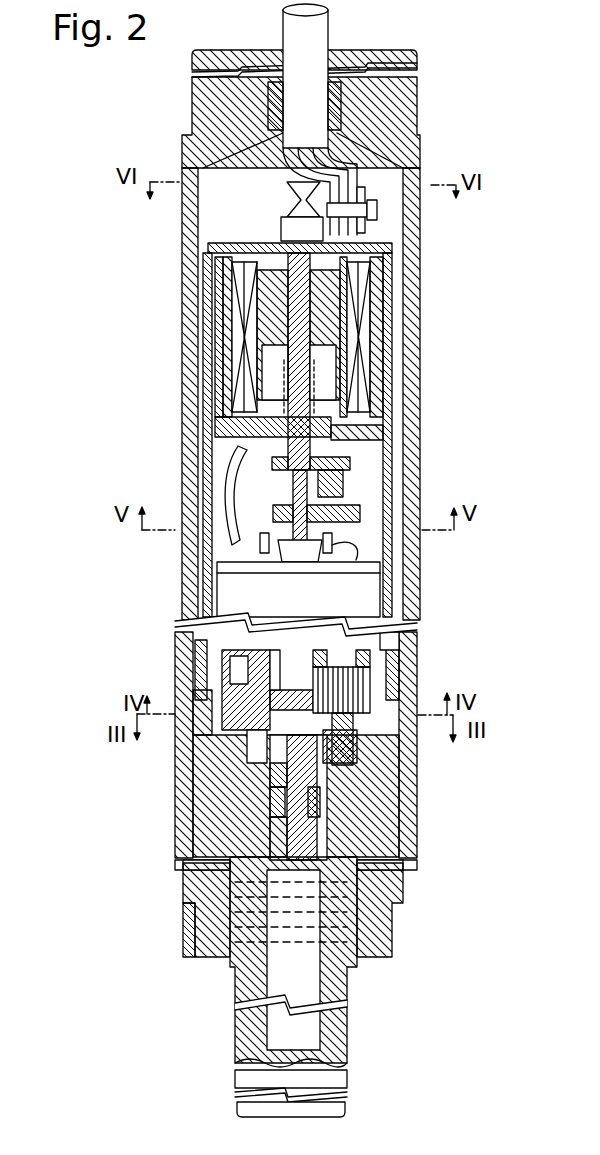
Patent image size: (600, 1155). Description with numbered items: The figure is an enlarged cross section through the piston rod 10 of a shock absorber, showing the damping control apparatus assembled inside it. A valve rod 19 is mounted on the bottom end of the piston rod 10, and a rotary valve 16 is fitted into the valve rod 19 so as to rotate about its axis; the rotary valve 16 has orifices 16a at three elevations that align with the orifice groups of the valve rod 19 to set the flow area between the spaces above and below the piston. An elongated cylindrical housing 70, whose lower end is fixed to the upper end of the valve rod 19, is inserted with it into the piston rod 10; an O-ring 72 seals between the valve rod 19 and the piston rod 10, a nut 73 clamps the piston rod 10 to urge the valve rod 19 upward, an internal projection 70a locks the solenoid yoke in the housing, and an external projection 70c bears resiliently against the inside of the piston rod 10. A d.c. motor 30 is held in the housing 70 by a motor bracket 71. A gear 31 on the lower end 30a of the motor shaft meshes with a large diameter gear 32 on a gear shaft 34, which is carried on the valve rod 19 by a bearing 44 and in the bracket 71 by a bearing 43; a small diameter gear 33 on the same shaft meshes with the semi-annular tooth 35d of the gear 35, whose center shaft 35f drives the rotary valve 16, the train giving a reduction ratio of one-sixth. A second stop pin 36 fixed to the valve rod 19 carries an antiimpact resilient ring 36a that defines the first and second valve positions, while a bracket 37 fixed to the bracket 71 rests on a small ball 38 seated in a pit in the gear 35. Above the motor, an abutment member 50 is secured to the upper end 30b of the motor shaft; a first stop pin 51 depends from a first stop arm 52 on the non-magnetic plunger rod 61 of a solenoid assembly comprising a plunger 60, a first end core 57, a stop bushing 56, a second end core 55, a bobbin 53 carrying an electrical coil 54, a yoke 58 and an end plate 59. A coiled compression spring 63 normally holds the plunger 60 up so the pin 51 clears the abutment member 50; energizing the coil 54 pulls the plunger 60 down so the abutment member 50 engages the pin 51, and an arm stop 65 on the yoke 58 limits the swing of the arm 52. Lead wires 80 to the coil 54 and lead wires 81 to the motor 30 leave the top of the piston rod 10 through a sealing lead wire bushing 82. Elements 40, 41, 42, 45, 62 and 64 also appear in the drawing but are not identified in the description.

The piston rod 10 is at (134, 138).
The rotary valve 16 is at (403, 896).
The orifices 16a is at (392, 935).
The valve rod 19 is at (240, 978).
The motor 30 is at (236, 603).
The lower end of the rotary shaft of the motor 30a is at (400, 634).
The upper end of the rotary shaft of the motor 30b is at (385, 552).
The gear 31 is at (298, 593).
The large diameter gear 32 is at (372, 682).
The small diameter gear 33 is at (356, 742).
The gear shaft 34 is at (330, 785).
The gear 35 is at (215, 746).
The semi-annular tooth 35d is at (360, 752).
The center shaft 35f is at (408, 862).
The second stop pin 36 is at (178, 776).
The antiimpact resilient ring 36a is at (198, 694).
The bracket 37 is at (222, 646).
The small ball 38 is at (222, 670).
The nut 40 is at (250, 762).
The bearing 41 is at (268, 802).
The bearing sleeve 42 is at (268, 842).
The bearing 43 is at (400, 654).
The bearing 44 is at (325, 805).
The chuck 45 is at (347, 1005).
The abutment member 50 is at (395, 496).
The first stop pin 51 is at (395, 462).
The first stop arm 52 is at (215, 420).
The bobbin 53 is at (223, 285).
The electrical coil 54 is at (395, 266).
The second end core 55 is at (215, 259).
The stop bushing 56 is at (395, 305).
The first end core 57 is at (262, 350).
The yoke 58 is at (262, 370).
The end plate 59 is at (208, 246).
The plunger 60 is at (395, 366).
The plunger rod 61 is at (395, 428).
The terminal 62 is at (398, 230).
The coiled compression spring 63 is at (236, 320).
The rotor core 64 is at (395, 337).
The arm stop 65 is at (395, 398).
The elongated cylindrical housing 70 is at (405, 596).
The projection 70a is at (206, 360).
The external projection 70c is at (395, 352).
The motor bracket 71 is at (198, 635).
The O-ring 72 is at (268, 780).
The nut 73 is at (186, 906).
The lead wires 80 is at (420, 150).
The lead wires 81 is at (238, 446).
The lead wire bushing 82 is at (272, 78).